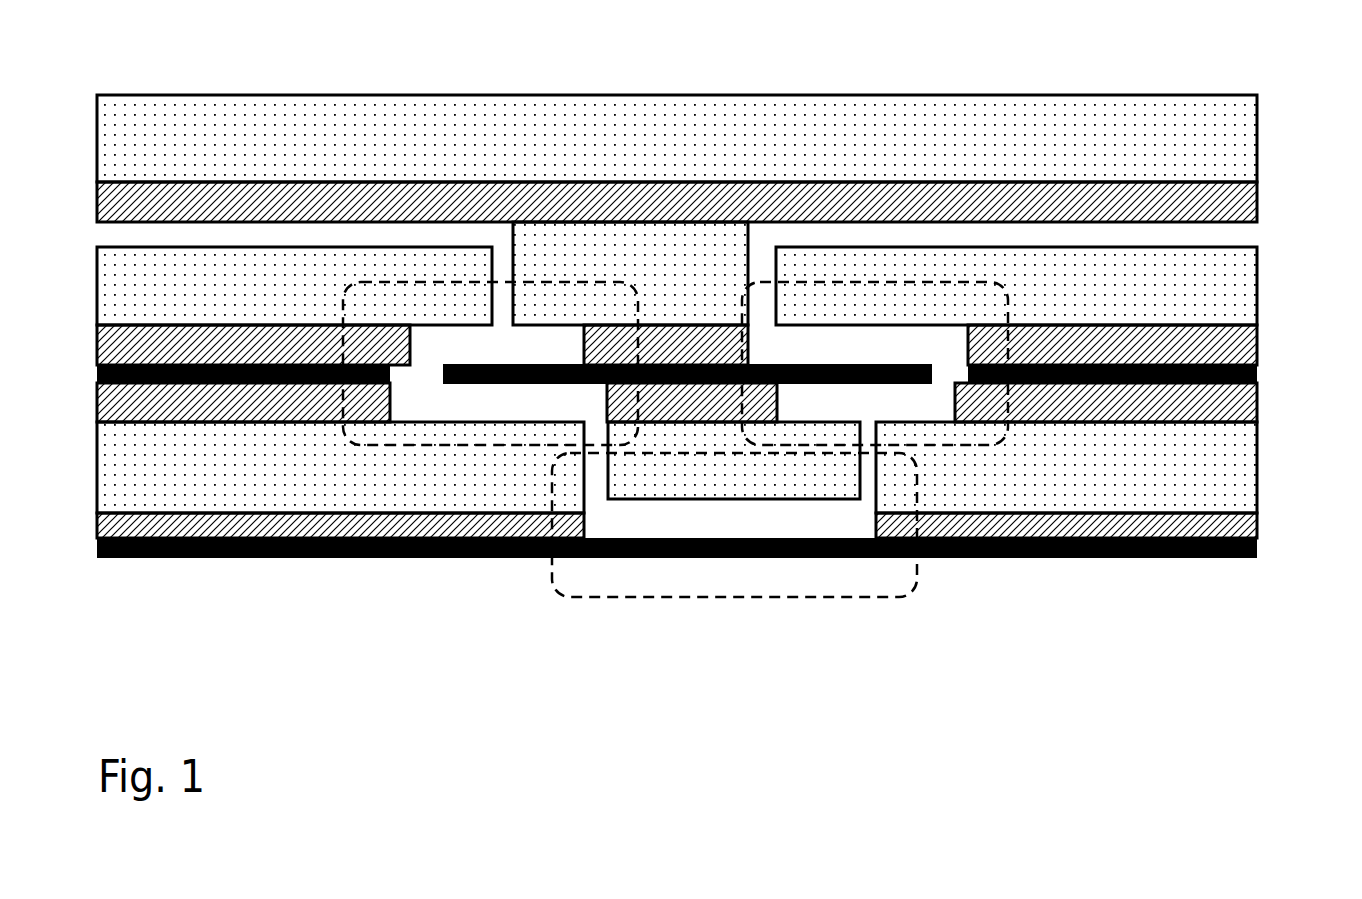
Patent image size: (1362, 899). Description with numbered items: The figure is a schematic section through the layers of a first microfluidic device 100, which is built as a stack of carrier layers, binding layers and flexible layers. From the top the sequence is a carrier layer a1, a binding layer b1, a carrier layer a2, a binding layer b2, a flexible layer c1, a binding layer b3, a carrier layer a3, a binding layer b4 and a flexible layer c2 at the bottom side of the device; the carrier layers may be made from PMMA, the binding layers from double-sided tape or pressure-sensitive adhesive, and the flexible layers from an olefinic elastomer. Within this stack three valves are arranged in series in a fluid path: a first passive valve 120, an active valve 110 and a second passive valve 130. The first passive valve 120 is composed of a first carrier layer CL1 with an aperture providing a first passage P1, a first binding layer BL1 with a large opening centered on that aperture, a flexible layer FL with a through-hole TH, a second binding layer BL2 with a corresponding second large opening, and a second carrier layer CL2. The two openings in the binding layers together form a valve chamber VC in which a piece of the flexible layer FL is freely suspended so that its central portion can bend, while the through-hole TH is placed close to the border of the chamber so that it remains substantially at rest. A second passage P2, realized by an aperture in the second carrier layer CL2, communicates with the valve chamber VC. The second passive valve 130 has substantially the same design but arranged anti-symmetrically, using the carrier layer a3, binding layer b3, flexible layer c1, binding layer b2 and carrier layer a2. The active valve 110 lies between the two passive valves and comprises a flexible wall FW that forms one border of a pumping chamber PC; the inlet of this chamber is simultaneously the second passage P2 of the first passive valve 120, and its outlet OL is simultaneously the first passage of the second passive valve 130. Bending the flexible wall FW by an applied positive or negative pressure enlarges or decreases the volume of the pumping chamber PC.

The microfluidic device 100 is at (1108, 53).
The active valve 110 is at (703, 597).
The first passive valve 120 is at (387, 282).
The second passive valve 130 is at (882, 282).
The carrier layer a1 is at (1238, 142).
The binding layer b1 is at (1238, 205).
The carrier layer a2 is at (727, 184).
The binding layer b2 is at (728, 204).
The flexible layer c1 is at (726, 506).
The binding layer b3 is at (728, 517).
The carrier layer a3 is at (727, 536).
The binding layer b4 is at (1238, 528).
The flexible layer c2 is at (1257, 551).
The first binding layer BL1 is at (370, 345).
The through-hole TH is at (502, 302).
The first passage P1 is at (430, 375).
The first carrier layer CL1 is at (610, 303).
The second binding layer BL2 is at (355, 403).
The flexible layer FL is at (465, 383).
The second carrier layer CL2 is at (493, 433).
The second passage P2 is at (597, 433).
The flexible wall FW is at (780, 558).
The outlet OL is at (865, 467).
The valve chamber VC is at (477, 356).
The pumping chamber PC is at (745, 531).